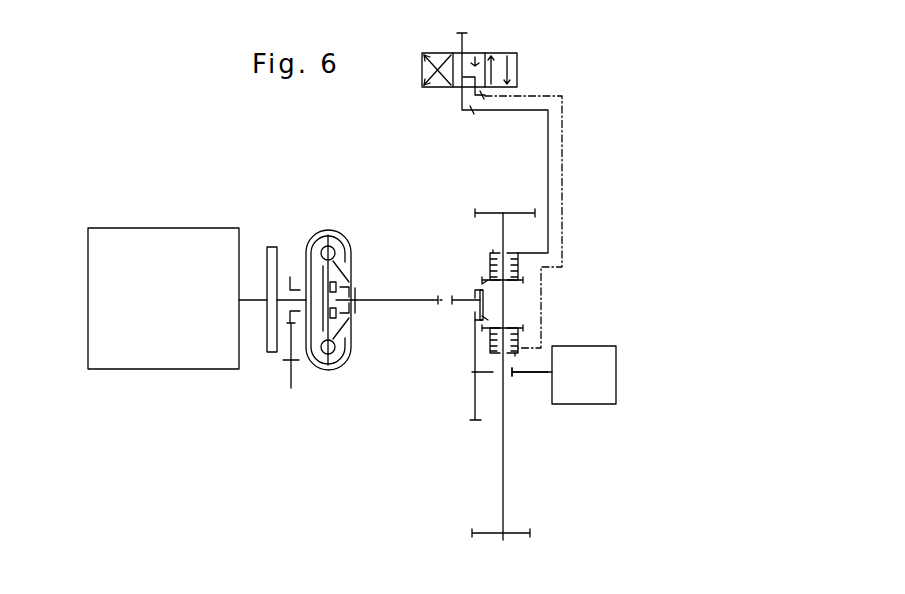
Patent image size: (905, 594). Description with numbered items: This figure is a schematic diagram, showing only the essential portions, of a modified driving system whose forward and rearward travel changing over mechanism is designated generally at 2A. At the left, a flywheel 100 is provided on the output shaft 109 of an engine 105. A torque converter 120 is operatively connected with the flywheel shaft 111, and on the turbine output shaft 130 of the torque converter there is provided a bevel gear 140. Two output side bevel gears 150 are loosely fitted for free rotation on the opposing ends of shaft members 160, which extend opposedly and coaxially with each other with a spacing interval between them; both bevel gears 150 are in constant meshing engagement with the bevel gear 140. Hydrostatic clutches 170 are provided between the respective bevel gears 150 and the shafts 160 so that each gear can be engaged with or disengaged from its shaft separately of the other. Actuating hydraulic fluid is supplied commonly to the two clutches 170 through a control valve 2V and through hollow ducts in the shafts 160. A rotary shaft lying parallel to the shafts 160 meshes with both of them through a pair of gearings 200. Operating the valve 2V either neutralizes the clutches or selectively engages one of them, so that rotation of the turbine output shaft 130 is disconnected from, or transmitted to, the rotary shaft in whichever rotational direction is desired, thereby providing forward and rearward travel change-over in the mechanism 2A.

The engine 105 is at (88, 325).
The output shaft 109 is at (250, 297).
The flywheel 100 is at (271, 247).
The flywheel shaft 111 is at (287, 291).
The torque converter 120 is at (346, 226).
The turbine output shaft 130 is at (407, 300).
The bevel gear 140 is at (481, 287).
The output side bevel gears 150 is at (520, 328).
The shaft members 160 is at (503, 235).
The hydrostatic clutch 170 is at (493, 249).
The gearings 200 is at (473, 207).
The control valve 2V is at (517, 70).
The forward and rearward travel changing over mechanism 2A is at (556, 327).